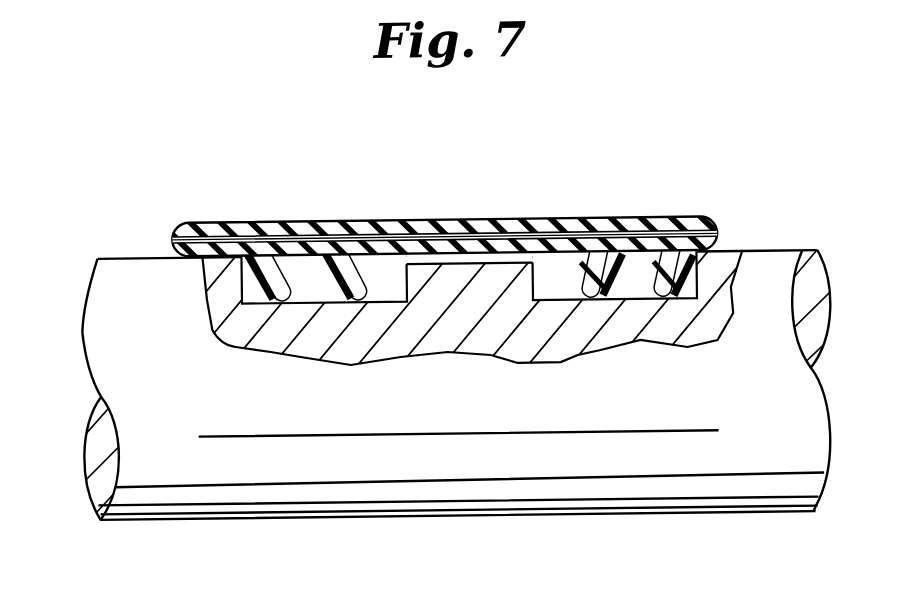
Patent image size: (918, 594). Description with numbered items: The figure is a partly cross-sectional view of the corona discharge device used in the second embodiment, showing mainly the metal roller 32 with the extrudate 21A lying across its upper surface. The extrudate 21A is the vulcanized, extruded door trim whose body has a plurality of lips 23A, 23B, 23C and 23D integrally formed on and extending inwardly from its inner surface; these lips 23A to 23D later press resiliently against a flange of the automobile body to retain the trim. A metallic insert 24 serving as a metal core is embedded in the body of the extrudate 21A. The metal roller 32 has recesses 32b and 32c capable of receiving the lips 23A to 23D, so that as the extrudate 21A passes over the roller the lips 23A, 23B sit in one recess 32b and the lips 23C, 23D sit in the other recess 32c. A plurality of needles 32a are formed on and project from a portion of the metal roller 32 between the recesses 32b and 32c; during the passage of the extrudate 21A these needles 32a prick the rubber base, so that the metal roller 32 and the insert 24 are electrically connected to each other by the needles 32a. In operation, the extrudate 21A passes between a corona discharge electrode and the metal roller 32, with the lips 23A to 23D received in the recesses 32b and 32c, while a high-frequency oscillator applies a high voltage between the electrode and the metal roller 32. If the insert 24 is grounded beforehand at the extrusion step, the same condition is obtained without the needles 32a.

The extrudate 21A is at (311, 190).
The lip 23A is at (352, 239).
The lip 23B is at (270, 236).
The lip 23C is at (573, 252).
The lip 23D is at (653, 253).
The metallic insert 24 is at (527, 220).
The metal roller 32 is at (472, 360).
The needles 32a is at (469, 262).
The recess 32b is at (393, 256).
The recess 32c is at (637, 275).